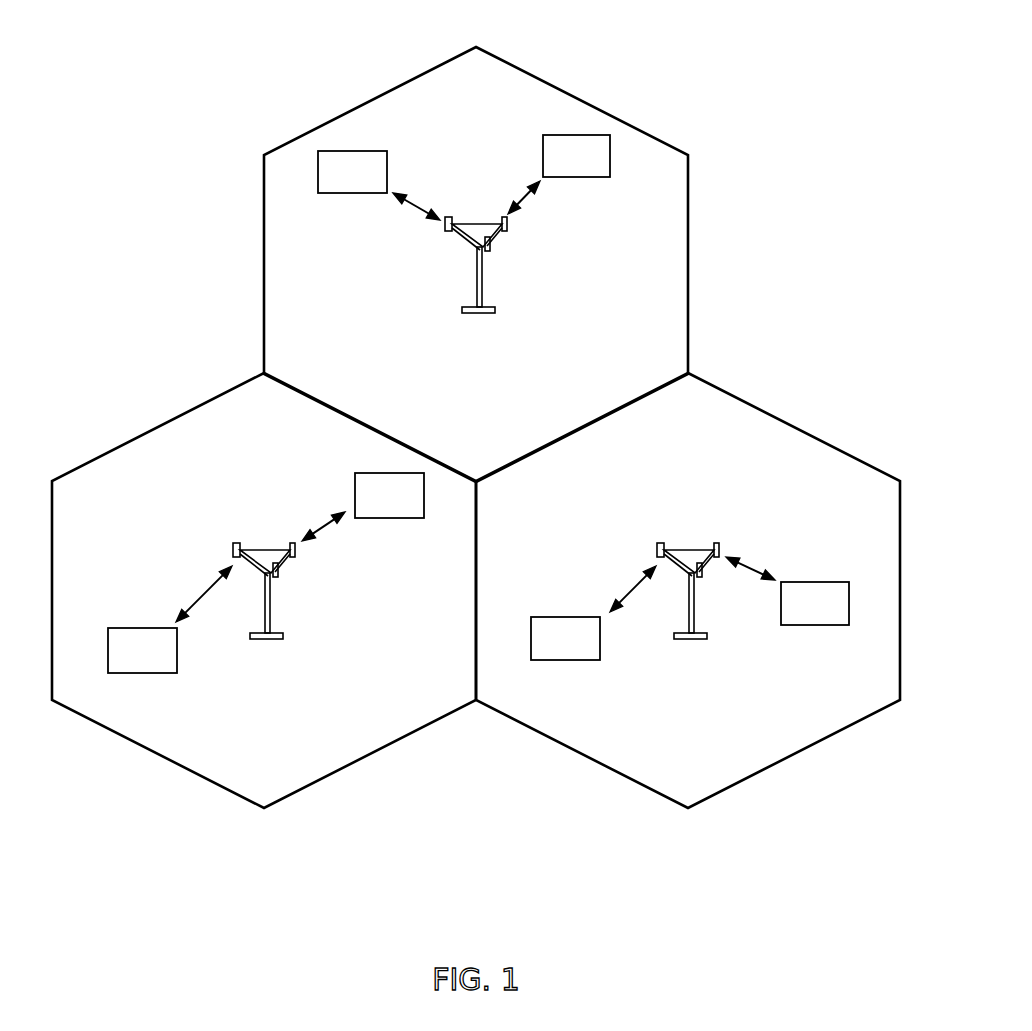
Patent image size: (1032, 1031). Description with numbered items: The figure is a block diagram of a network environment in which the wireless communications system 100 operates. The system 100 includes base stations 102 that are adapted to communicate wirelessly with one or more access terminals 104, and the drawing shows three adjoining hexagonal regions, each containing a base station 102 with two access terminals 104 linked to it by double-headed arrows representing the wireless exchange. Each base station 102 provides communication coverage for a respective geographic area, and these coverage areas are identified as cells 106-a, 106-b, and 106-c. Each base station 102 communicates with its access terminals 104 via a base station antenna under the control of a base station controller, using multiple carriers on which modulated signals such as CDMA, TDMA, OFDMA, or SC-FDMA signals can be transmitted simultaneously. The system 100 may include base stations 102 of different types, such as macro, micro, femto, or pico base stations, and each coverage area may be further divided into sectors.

The wireless communications system 100 is at (842, 48).
The base station 102 is at (479, 223).
The access terminal 104 is at (341, 194).
The cell 106-a is at (134, 439).
The cell 106-b is at (565, 92).
The cell 106-c is at (792, 426).